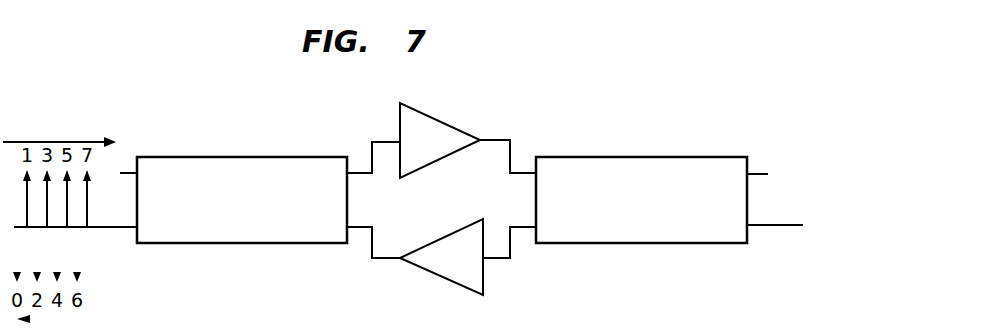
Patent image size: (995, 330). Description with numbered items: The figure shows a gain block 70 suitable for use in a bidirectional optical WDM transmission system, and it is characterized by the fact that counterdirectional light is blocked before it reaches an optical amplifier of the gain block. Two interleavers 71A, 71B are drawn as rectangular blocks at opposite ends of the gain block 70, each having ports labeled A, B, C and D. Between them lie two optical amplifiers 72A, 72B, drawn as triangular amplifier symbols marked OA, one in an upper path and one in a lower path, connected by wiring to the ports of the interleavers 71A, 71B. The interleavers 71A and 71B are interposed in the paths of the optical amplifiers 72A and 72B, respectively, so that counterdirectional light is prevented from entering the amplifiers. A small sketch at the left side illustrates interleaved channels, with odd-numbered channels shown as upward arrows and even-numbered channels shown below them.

The gain block 70 is at (388, 83).
The interleaver 71A is at (247, 157).
The interleaver 71B is at (647, 157).
The optical amplifier 72A is at (443, 121).
The optical amplifier 72B is at (440, 277).